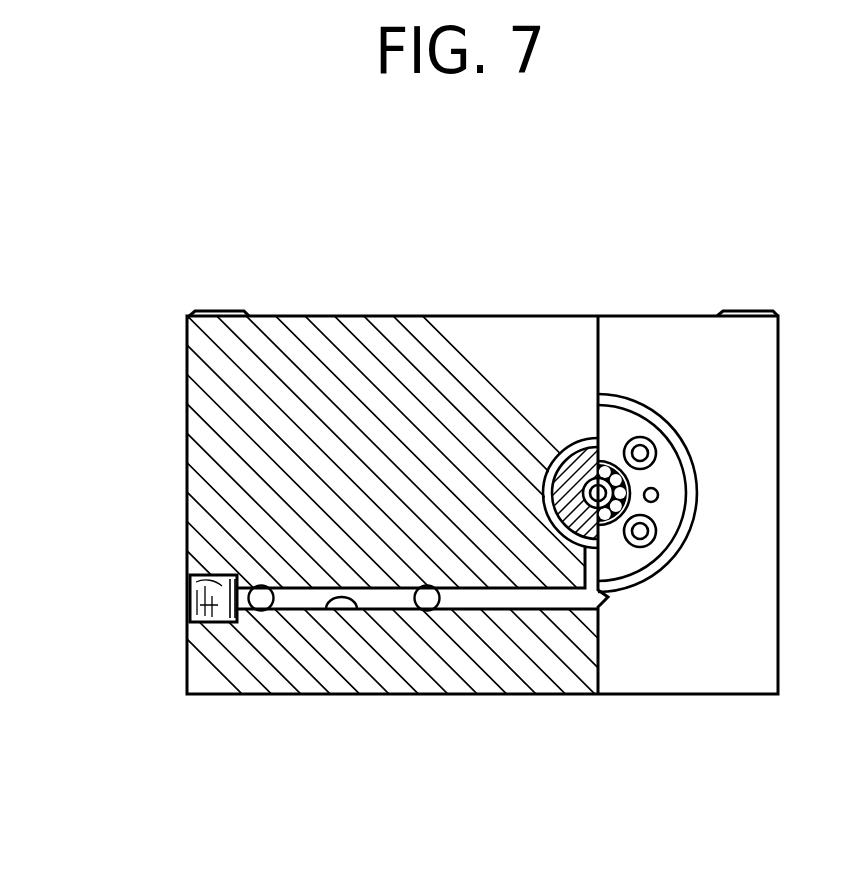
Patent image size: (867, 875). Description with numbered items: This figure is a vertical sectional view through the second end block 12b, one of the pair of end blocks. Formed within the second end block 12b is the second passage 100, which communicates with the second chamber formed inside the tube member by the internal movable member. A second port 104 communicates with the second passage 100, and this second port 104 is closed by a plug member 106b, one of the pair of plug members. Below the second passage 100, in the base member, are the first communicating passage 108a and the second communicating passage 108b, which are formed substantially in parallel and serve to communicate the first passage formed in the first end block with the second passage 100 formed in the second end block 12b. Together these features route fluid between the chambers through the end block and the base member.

The second end block 12b is at (223, 432).
The second port 104 is at (190, 590).
The plug member 106b is at (203, 604).
The second communicating passage 108b is at (270, 612).
The second passage 100 is at (338, 612).
The first communicating passage 108a is at (438, 612).